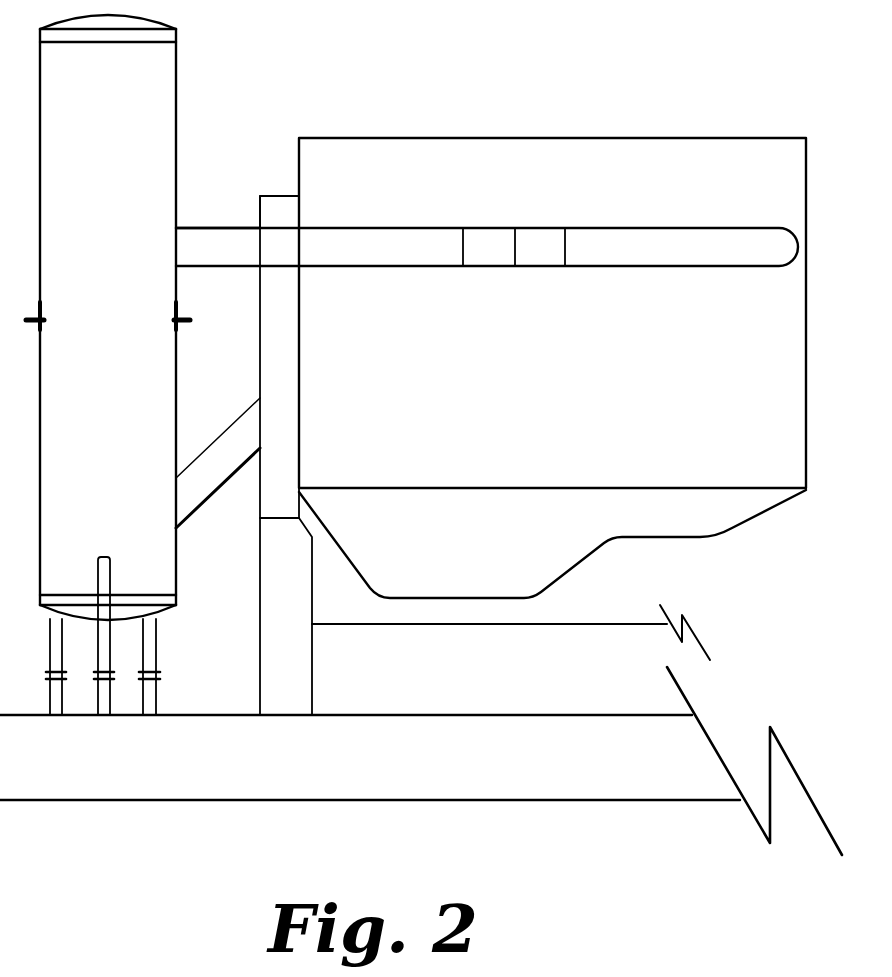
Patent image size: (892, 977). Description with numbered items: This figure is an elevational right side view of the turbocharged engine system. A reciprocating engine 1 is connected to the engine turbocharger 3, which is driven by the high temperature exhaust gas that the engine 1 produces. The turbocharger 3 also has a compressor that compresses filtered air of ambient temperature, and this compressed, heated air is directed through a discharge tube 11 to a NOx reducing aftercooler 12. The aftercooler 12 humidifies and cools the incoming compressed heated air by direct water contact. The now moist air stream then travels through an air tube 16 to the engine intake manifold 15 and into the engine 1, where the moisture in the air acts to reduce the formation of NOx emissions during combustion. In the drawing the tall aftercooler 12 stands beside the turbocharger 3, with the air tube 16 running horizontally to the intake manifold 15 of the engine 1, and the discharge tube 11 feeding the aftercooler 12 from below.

The reciprocating engine 1 is at (558, 96).
The engine turbocharger 3 is at (260, 327).
The discharge tube 11 is at (200, 507).
The NOx reducing aftercooler 12 is at (178, 78).
The engine intake manifold 15 is at (638, 228).
The air tube 16 is at (212, 228).